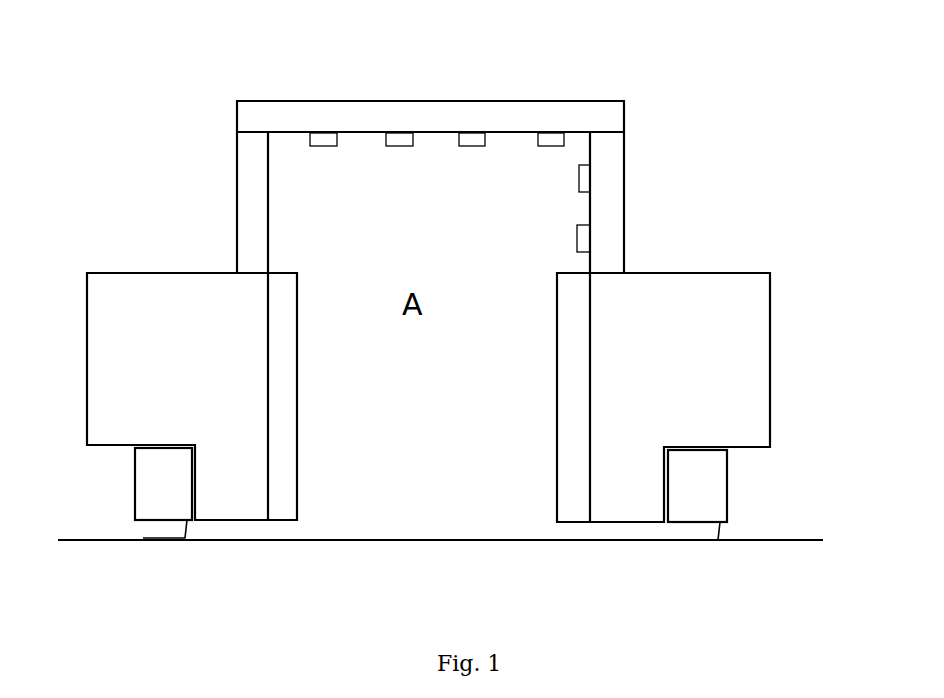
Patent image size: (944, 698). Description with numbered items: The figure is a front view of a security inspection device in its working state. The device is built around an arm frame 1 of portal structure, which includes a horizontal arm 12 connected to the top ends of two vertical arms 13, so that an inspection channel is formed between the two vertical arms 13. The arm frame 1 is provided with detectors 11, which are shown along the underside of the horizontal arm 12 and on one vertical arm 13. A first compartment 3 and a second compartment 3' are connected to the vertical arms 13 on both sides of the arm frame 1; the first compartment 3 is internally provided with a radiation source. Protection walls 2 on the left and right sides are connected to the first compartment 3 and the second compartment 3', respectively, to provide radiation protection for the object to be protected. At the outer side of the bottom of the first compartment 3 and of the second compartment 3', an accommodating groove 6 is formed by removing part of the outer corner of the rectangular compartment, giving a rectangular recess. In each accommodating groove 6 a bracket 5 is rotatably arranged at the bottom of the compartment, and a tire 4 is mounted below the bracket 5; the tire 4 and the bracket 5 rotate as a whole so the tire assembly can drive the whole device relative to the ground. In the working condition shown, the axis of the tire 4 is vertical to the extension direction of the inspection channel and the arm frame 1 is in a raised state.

The arm frame 1 is at (624, 193).
The detector 11 is at (397, 140).
The horizontal arm 12 is at (310, 113).
The vertical arm 13 is at (253, 180).
The protection wall 2 is at (575, 405).
The first compartment 3 is at (163, 309).
The second compartment 3' is at (716, 397).
The tire 4 is at (163, 528).
The bracket 5 is at (688, 513).
The accommodating groove 6 is at (117, 467).